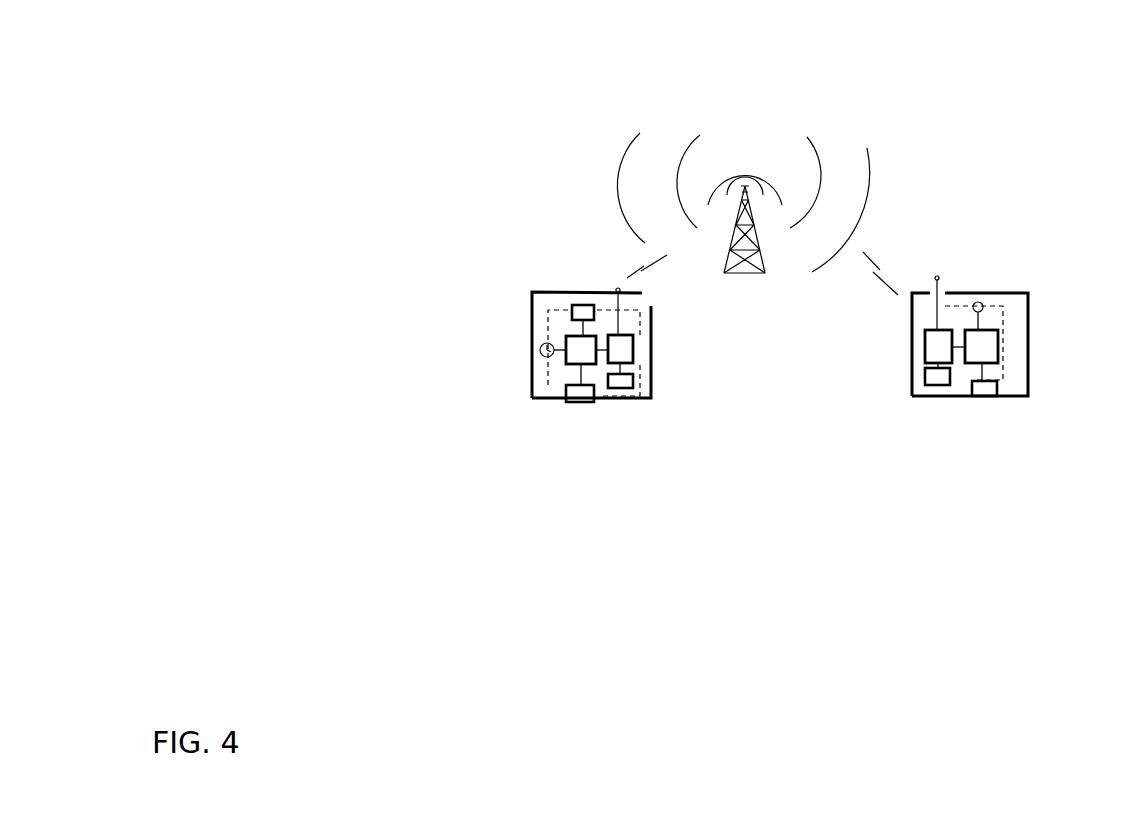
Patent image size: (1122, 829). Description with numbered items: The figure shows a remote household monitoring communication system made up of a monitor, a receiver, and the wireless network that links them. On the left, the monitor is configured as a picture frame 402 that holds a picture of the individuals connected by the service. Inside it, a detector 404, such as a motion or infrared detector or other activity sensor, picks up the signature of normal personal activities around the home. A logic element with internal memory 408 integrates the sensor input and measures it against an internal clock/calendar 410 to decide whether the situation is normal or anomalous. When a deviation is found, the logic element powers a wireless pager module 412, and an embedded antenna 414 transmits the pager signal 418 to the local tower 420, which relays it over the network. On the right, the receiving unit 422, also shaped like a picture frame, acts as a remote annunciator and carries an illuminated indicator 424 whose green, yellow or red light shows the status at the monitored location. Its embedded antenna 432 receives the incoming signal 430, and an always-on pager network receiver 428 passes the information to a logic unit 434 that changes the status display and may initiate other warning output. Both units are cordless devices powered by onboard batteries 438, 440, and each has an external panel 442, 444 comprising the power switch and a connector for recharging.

The picture frame 402 is at (543, 392).
The detector 404 is at (578, 305).
The logic element with internal memory 408 is at (584, 356).
The internal clock/calendar 410 is at (545, 349).
The wireless pager module 412 is at (625, 350).
The embedded antenna 414 is at (622, 305).
The pager signal 418 is at (636, 266).
The local tower 420 is at (744, 180).
The receiving unit 422 is at (1005, 389).
The illuminated indicator 424 is at (981, 306).
The always-on pager network receiver 428 is at (935, 349).
The incoming signal 430 is at (875, 255).
The embedded antenna 432 is at (935, 312).
The logic unit 434 is at (983, 352).
The onboard batteries 438 is at (626, 382).
The onboard batteries 440 is at (930, 380).
The external panel 442 is at (578, 391).
The external panel 444 is at (979, 393).